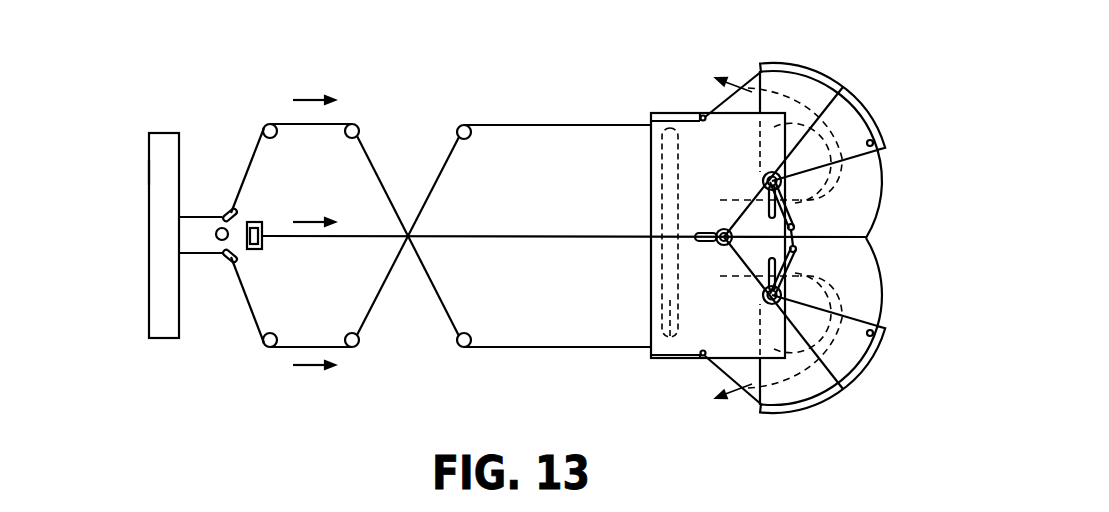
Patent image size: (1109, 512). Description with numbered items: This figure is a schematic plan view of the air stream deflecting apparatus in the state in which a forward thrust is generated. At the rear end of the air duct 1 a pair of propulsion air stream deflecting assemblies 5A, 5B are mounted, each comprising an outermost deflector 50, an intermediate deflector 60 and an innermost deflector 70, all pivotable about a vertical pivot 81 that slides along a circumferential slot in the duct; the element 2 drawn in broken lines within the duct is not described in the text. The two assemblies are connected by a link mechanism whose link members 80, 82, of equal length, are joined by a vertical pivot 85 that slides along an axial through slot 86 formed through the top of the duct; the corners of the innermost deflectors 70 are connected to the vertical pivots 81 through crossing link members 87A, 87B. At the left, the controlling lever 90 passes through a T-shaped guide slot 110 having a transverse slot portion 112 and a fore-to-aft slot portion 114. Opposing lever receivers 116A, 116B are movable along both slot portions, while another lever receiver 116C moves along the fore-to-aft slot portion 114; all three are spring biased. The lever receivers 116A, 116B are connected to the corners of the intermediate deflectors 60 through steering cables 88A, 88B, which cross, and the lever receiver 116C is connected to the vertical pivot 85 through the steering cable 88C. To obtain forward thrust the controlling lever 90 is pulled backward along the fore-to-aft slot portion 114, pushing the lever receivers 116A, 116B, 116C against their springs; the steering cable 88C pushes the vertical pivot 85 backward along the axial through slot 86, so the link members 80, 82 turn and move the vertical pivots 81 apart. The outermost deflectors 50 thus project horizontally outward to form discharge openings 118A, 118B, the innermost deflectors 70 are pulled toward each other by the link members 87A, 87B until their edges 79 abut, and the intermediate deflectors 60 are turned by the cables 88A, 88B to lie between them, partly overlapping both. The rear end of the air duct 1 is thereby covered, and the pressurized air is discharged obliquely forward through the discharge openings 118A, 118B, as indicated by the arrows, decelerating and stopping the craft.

The air duct 1 is at (650, 158).
The second sheet 2 is at (666, 310).
The starboard side deflecting assembly 5A is at (860, 74).
The port side deflecting assembly 5B is at (865, 384).
The outermost deflector 50 is at (812, 72).
The intermediate deflector 60 is at (858, 106).
The innermost deflector 70 is at (886, 168).
The abutting edge 79 is at (872, 215).
The link member 80 is at (756, 190).
The vertical pivot 81 is at (776, 172).
The link member 82 is at (722, 246).
The vertical pivot 85 is at (741, 231).
The axial through slot 86 is at (698, 244).
The crossing link member 87A is at (795, 252).
The crossing link member 87B is at (794, 222).
The steering cable 88A is at (546, 103).
The steering cable 88B is at (533, 349).
The steering cable 88C is at (546, 216).
The controlling lever 90 is at (218, 243).
The T-shaped guide slot 110 is at (167, 318).
The transverse slot portion 112 is at (152, 180).
The fore-to-aft slot portion 114 is at (200, 247).
The lever receiver 116A is at (234, 257).
The lever receiver 116B is at (222, 210).
The lever receiver 116C is at (250, 221).
The discharge opening 118A is at (752, 90).
The discharge opening 118B is at (752, 386).